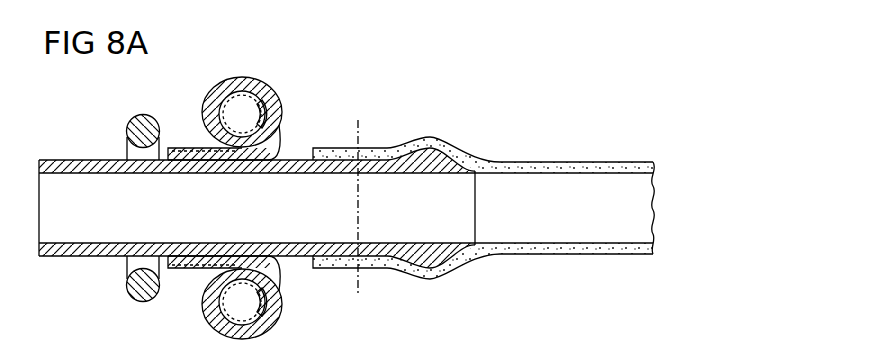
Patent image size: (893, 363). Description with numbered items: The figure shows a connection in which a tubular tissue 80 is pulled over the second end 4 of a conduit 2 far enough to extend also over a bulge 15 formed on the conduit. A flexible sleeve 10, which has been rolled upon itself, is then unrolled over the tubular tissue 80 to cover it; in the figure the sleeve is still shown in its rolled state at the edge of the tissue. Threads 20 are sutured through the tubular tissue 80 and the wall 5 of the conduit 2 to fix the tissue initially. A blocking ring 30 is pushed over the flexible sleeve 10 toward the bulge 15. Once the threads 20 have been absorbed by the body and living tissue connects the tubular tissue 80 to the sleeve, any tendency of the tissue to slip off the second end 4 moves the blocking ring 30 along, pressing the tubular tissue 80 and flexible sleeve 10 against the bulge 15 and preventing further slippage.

The conduit 2 is at (77, 230).
The second end 4 is at (460, 212).
The wall 5 is at (290, 158).
The flexible sleeve 10 is at (280, 86).
The bulge 15 is at (430, 137).
The threads 20 is at (358, 288).
The blocking ring 30 is at (128, 125).
The tubular tissue 80 is at (597, 162).